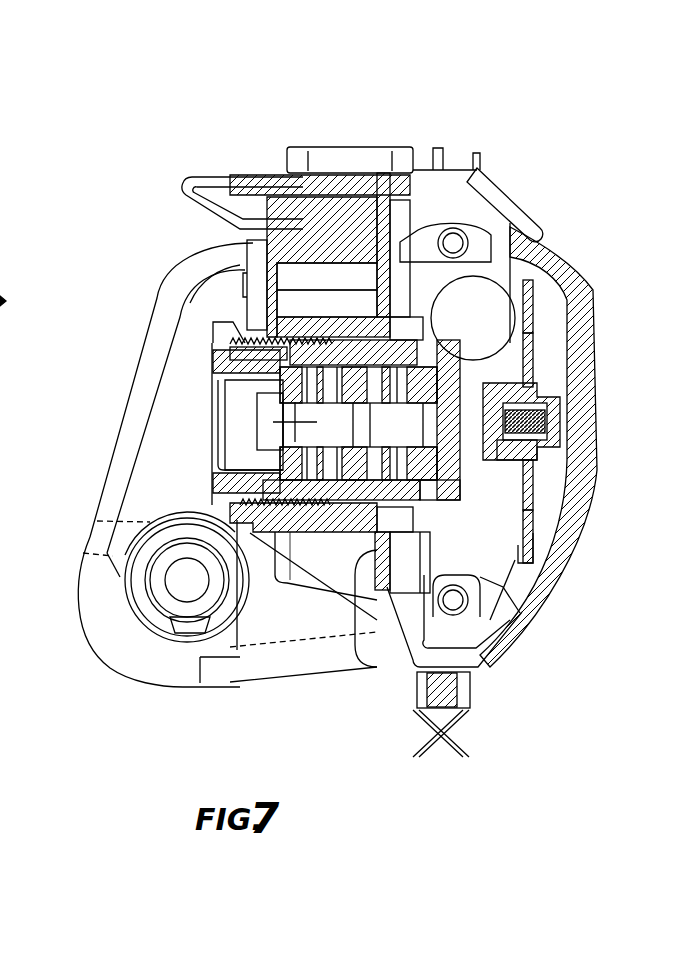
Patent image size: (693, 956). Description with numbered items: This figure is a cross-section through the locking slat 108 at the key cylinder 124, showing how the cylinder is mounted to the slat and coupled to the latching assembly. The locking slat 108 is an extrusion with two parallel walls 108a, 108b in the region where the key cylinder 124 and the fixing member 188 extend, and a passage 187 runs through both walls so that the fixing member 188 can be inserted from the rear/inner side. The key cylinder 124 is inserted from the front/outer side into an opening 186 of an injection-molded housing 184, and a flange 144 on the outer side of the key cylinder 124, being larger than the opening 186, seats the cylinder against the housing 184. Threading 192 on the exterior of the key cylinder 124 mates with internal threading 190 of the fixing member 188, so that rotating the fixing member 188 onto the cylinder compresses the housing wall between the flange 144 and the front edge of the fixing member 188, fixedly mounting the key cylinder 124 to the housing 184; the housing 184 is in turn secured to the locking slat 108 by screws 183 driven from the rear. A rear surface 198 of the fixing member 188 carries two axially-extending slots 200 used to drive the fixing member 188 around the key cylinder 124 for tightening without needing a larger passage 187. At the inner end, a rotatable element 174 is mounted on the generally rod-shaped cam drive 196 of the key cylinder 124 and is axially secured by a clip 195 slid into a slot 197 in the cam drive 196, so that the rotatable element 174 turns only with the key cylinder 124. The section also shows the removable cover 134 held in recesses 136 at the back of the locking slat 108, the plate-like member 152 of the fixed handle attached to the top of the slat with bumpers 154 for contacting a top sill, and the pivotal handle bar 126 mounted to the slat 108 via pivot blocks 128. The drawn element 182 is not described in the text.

The locking slat 108 is at (490, 663).
The outer wall 108a is at (348, 557).
The inner wall 108b is at (508, 548).
The key cylinder 124 is at (217, 360).
The bar 126 is at (143, 620).
The pivot blocks 128 is at (241, 677).
The removable cover 134 is at (567, 257).
The recesses 136 is at (552, 258).
The flange 144 is at (245, 272).
The plate-like member 152 is at (197, 176).
The bumpers 154 is at (378, 147).
The rotatable element 174 is at (530, 353).
The side plate 182 is at (530, 317).
The screws 183 is at (465, 300).
The housing 184 is at (245, 277).
The opening 186 is at (253, 240).
The passage 187 is at (523, 553).
The fixing member 188 is at (333, 520).
The internal threading 190 is at (280, 388).
The threading 192 is at (308, 330).
The clip 195 is at (541, 390).
The cam drive 196 is at (553, 440).
The slot 197 is at (548, 406).
The rear surface 198 is at (448, 330).
The axially-extending slots 200 is at (403, 328).